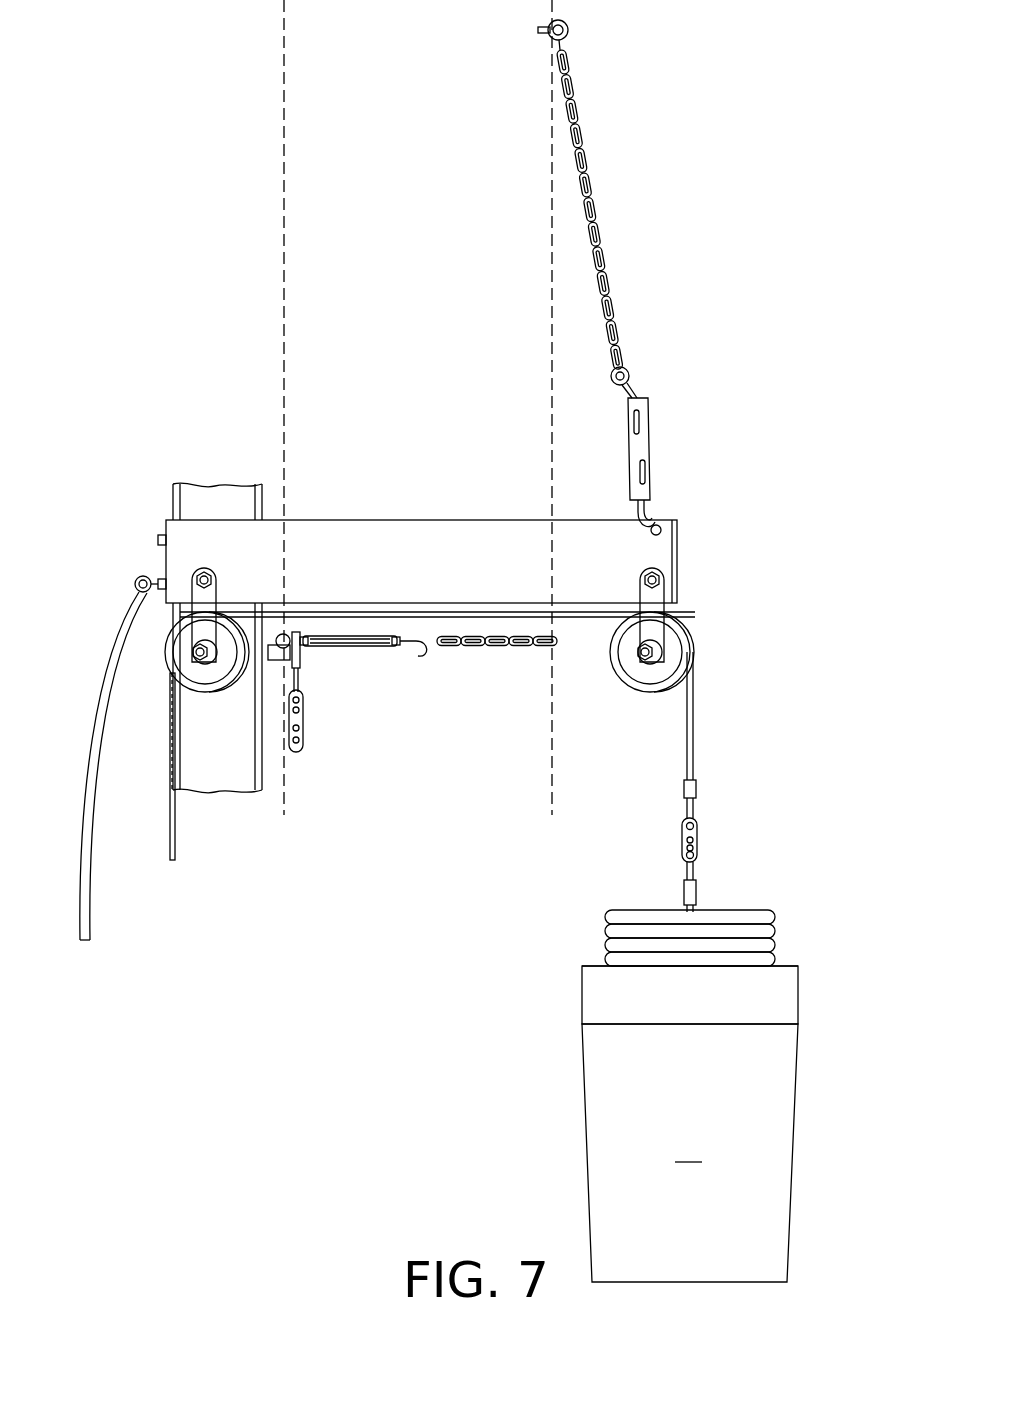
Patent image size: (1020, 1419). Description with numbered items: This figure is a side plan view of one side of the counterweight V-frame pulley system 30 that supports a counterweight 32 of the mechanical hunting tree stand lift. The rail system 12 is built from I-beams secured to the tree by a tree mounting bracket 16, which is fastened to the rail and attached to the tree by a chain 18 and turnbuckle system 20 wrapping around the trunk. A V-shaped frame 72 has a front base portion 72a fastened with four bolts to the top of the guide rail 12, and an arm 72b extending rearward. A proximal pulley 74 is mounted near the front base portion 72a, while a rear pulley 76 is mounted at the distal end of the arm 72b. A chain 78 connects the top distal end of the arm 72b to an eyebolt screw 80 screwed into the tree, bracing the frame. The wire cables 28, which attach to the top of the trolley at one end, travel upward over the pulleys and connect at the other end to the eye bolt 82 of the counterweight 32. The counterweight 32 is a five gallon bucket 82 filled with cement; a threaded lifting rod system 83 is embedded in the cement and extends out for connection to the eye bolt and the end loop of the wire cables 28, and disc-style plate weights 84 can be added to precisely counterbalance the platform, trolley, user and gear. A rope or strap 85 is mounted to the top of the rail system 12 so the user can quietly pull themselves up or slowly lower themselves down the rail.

The rail system 12 is at (168, 500).
The V-shaped frame 72 is at (384, 515).
The front base portion 72a is at (166, 582).
The arm 72b is at (420, 545).
The V-frame pulley system 30 is at (703, 523).
The proximal pulleys 74 is at (192, 650).
The rear pulleys 76 is at (682, 652).
The chain 78 is at (610, 235).
The eyebolt screw 80 is at (570, 38).
The tree mounting bracket 16 is at (305, 660).
The turnbuckle system 20 is at (360, 645).
The chain 18 is at (472, 646).
The wire cables 28 is at (170, 842).
The rope or strap 85 is at (87, 900).
The bucket / eye bolt 82 is at (700, 805).
The threaded lifting rod system 83 is at (697, 892).
The plate weights 84 is at (644, 912).
The counterweight 32 is at (800, 962).